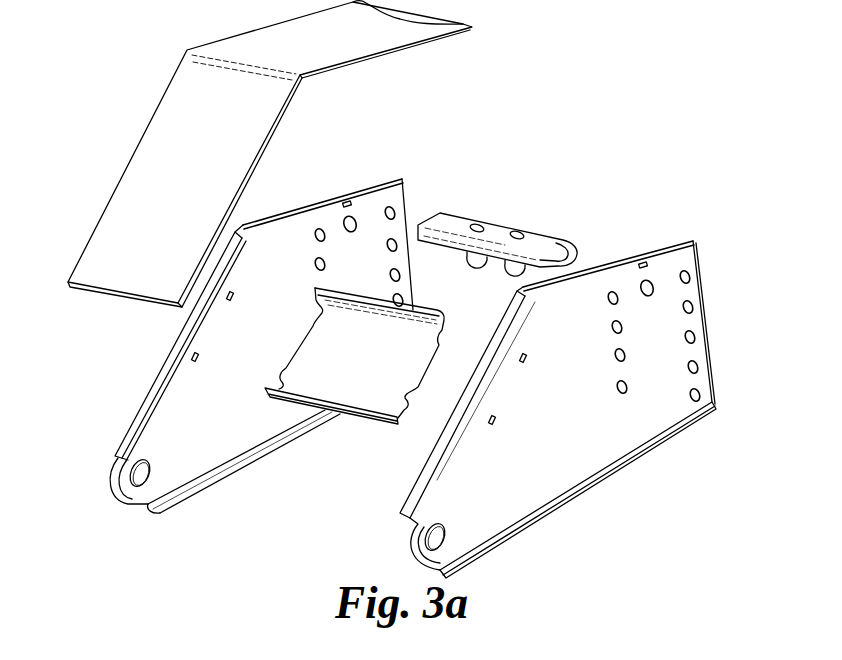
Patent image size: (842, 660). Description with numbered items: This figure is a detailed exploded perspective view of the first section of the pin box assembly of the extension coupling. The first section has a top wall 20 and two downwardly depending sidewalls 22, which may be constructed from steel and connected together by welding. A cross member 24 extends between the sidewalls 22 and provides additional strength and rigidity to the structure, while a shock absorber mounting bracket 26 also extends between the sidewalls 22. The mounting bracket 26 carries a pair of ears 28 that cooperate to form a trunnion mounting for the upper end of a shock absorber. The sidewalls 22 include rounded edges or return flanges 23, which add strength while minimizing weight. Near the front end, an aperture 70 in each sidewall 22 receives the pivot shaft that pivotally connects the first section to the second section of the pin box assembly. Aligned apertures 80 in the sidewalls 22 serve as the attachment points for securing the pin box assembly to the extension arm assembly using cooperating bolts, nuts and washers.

The top wall 20 is at (138, 147).
The sidewalls 22 is at (443, 332).
The return flanges 23 is at (182, 343).
The cross member 24 is at (330, 387).
The shock absorber mounting bracket 26 is at (497, 236).
The ears 28 is at (476, 270).
The aperture 70 is at (143, 480).
The aligned apertures 80 is at (324, 264).